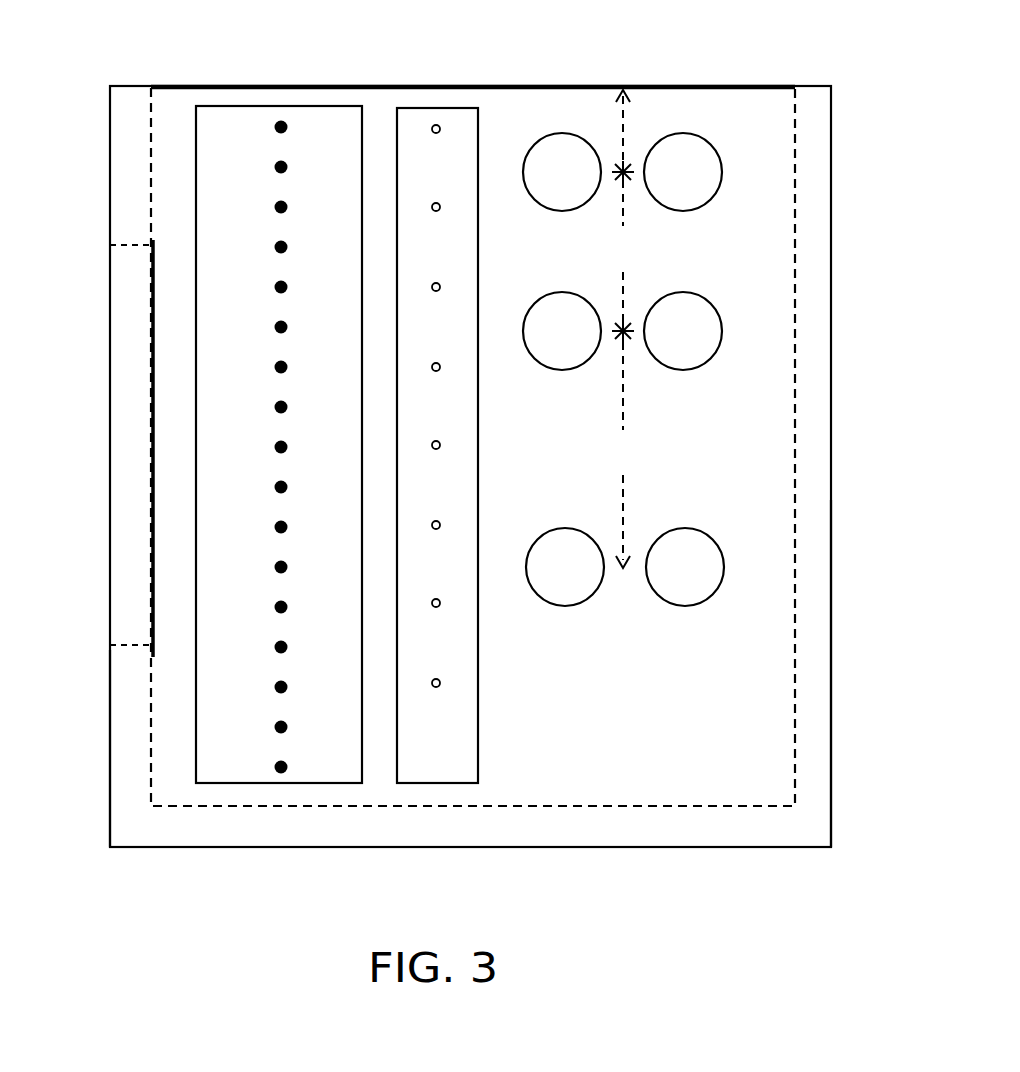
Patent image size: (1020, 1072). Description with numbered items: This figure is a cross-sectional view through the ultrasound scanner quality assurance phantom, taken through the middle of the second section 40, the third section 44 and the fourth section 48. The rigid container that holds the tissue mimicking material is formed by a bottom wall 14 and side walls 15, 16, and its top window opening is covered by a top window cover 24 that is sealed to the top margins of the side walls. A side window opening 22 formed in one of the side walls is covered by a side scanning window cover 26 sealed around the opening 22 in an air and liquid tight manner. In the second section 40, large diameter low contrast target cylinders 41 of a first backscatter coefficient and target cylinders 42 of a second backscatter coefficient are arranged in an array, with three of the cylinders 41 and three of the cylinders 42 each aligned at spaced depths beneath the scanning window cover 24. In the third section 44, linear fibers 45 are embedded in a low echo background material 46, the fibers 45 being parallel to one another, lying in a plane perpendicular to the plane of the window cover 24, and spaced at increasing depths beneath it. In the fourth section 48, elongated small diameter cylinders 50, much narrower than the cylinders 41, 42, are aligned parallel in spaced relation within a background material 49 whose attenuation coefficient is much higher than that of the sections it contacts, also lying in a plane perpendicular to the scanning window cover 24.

The bottom wall 14 is at (495, 848).
The side wall 15 is at (833, 692).
The side wall 16 is at (110, 730).
The side window opening 22 is at (134, 247).
The top window cover 24 is at (507, 86).
The side scanning window cover 26 is at (155, 337).
The second section 40 is at (634, 491).
The target cylinders 41 is at (720, 150).
The target cylinders 42 is at (550, 136).
The third section 44 is at (437, 784).
The linear fibers 45 is at (434, 125).
The low echo background material 46 is at (478, 527).
The fourth section 48 is at (306, 784).
The background material 49 is at (332, 108).
The small diameter cylinders 50 is at (286, 407).